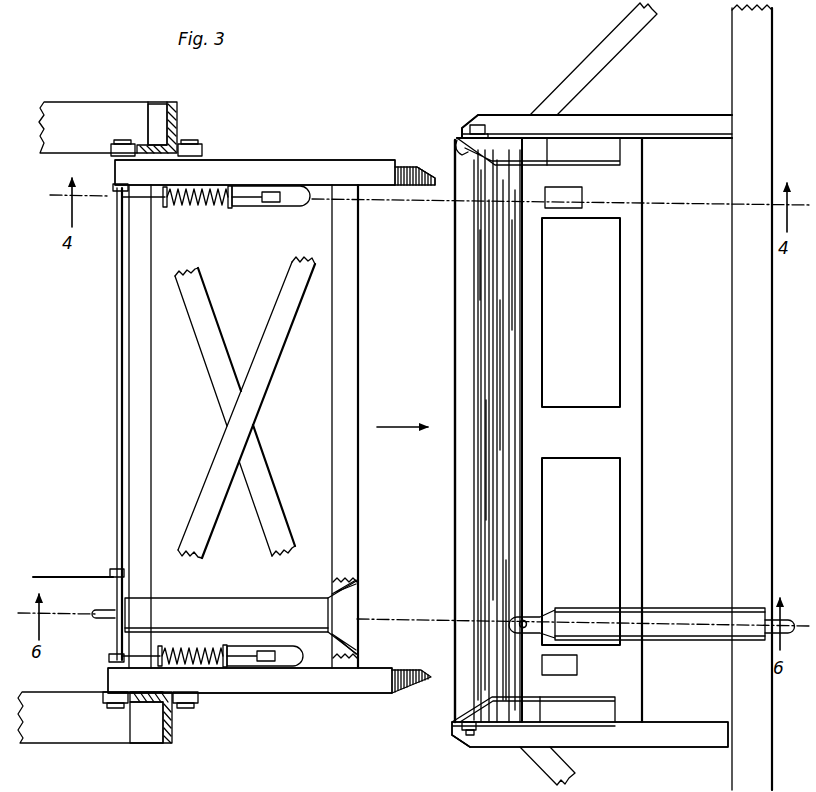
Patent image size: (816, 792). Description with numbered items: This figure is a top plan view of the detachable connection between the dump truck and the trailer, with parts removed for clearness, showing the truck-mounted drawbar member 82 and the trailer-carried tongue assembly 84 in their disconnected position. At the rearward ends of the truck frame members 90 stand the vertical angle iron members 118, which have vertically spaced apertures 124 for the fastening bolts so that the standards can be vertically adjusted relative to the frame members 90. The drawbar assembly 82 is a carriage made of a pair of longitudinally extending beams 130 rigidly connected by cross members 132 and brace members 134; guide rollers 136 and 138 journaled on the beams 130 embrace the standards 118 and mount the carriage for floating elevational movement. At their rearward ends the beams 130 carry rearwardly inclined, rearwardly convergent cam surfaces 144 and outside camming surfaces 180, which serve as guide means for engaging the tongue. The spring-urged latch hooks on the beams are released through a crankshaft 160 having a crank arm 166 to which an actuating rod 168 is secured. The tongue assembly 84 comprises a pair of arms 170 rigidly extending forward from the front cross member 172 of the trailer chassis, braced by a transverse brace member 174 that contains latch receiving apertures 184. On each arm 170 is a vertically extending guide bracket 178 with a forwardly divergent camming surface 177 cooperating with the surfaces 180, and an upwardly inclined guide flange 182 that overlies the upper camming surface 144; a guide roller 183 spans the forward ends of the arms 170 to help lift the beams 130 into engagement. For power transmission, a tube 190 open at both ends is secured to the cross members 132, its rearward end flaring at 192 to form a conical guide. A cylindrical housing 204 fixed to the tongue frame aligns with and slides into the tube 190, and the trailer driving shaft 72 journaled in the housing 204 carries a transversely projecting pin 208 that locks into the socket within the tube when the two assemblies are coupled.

The driving shaft 72 is at (536, 619).
The drawbar member 82 is at (315, 150).
The tongue assembly 84 is at (516, 100).
The frame members 90 is at (58, 112).
The vertical angle iron members 118 is at (148, 138).
The vertically spaced apertures 124 is at (178, 116).
The longitudinally extending beams 130 is at (254, 166).
The cross members 132 is at (146, 395).
The brace members 134 is at (282, 310).
The upper guide rollers 136 is at (113, 142).
The upper guide rollers 138 is at (200, 145).
The upper cam surface 144 is at (410, 167).
The crankshaft 160 is at (121, 281).
The crank arm 166 is at (117, 568).
The actuating rod 168 is at (48, 575).
The arms 170 is at (668, 125).
The front cross member 172 is at (740, 308).
The transverse brace member 174 is at (638, 300).
The camming surface 177 is at (609, 166).
The guide bracket 178 is at (457, 140).
The outside camming surfaces 180 is at (423, 183).
The guide flanges 182 is at (427, 763).
The guide roller 183 is at (466, 328).
The latch receiving apertures 184 is at (562, 207).
The tube 190 is at (233, 603).
The flaring conical member 192 is at (352, 612).
The cylindrical housing 204 is at (663, 620).
The transversely projecting pin 208 is at (517, 620).